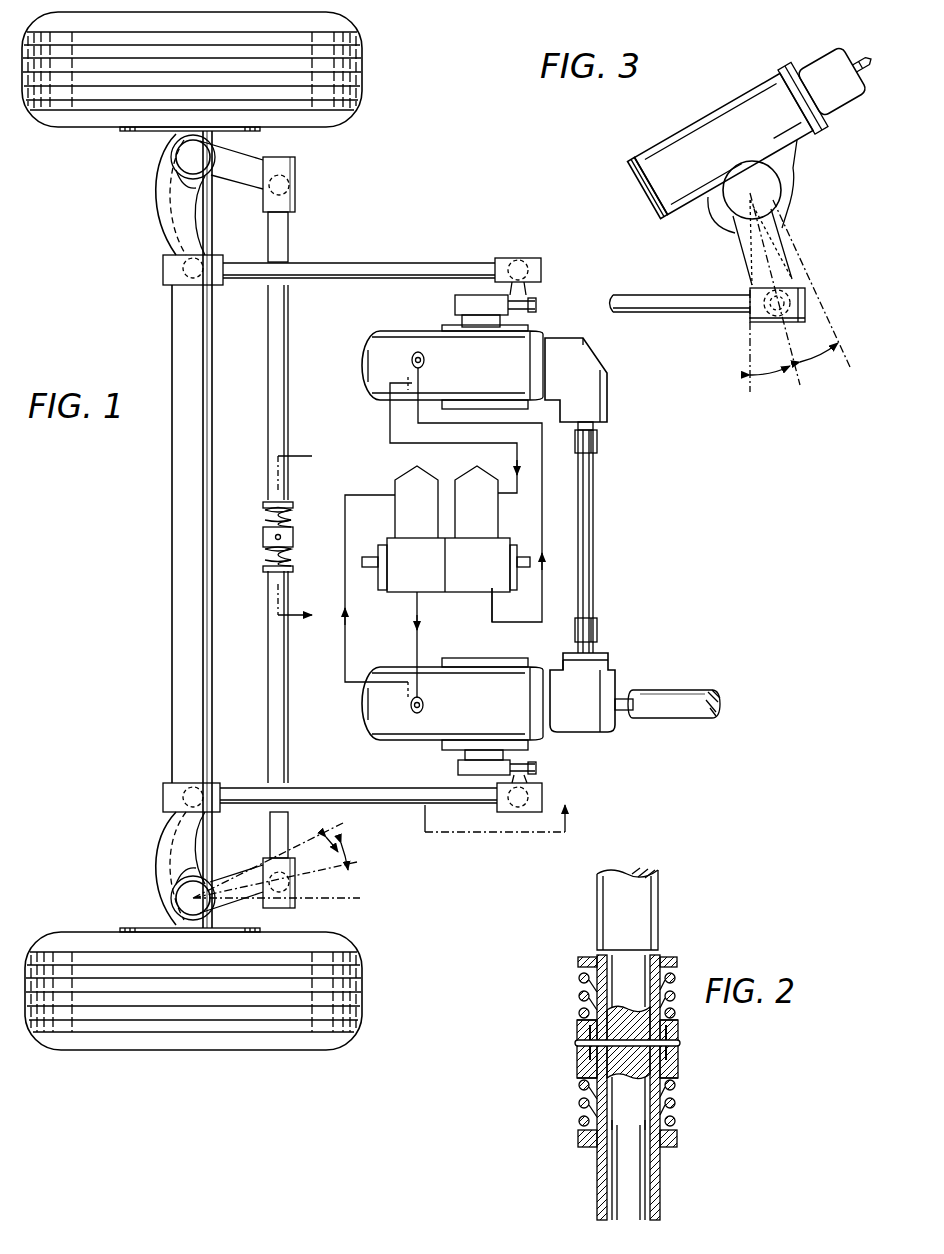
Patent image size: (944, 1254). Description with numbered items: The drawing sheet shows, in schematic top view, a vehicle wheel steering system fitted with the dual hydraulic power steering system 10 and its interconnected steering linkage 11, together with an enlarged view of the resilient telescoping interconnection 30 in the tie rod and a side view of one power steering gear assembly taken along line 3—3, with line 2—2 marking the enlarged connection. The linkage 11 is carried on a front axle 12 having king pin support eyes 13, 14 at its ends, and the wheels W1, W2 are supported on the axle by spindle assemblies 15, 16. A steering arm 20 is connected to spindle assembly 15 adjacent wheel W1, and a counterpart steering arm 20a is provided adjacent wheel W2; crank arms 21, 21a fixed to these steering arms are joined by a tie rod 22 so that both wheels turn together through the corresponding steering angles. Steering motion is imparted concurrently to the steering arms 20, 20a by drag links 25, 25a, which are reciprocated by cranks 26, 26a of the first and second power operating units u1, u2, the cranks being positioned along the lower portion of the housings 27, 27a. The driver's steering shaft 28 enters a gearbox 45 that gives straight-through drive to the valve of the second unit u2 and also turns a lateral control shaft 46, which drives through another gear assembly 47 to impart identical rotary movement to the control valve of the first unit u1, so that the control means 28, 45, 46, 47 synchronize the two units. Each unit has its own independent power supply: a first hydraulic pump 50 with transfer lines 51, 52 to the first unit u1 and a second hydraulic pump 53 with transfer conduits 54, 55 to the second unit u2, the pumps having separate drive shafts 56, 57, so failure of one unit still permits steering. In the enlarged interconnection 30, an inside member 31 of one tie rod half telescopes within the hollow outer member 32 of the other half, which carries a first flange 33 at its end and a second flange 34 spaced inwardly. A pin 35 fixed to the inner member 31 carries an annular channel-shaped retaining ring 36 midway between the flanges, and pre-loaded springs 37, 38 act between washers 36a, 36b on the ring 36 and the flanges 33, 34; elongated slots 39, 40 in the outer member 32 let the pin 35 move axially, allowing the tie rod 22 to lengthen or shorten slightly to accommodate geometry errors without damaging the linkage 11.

In FIG. 1, the first wheel W1 is at (362, 50).
In FIG. 1, the second wheel W2 is at (340, 1046).
In FIG. 1, the power steering system 10 is at (640, 440).
In FIG. 1, the steering linkage 11 is at (348, 200).
In FIG. 1, the front axle 12 is at (176, 341).
In FIG. 1, the king pin support eye 13 is at (180, 160).
In FIG. 1, the king pin support eye 14 is at (165, 906).
In FIG. 1, the spindle assembly 15 is at (170, 143).
In FIG. 1, the spindle assembly 16 is at (172, 920).
In FIG. 1, the steering arm 20 is at (162, 232).
In FIG. 1, the counterpart steering arm 20a is at (165, 836).
In FIG. 1, the crank arm 21 is at (233, 182).
In FIG. 1, the crank arm 21a is at (218, 878).
In FIG. 1, the tie rod 22 is at (272, 739).
In FIG. 2, the tie rod 22 is at (645, 895).
In FIG. 1, the drag link 25 is at (386, 270).
In FIG. 1, the drag link 25a is at (376, 790).
In FIG. 3, the drag link 25a is at (684, 312).
In FIG. 1, the crank 26 is at (523, 300).
In FIG. 1, the crank 26a is at (537, 767).
In FIG. 3, the crank 26a is at (768, 200).
In FIG. 1, the housing 27 is at (394, 346).
In FIG. 1, the housing 27a is at (452, 704).
In FIG. 3, the housing 27a is at (690, 142).
In FIG. 1, the steering shaft 28 is at (690, 700).
In FIG. 1, the interconnection 30 is at (250, 522).
In FIG. 2, the inside member 31 is at (614, 952).
In FIG. 2, the outer member 32 is at (600, 1162).
In FIG. 2, the first flange 33 is at (580, 964).
In FIG. 2, the second flange 34 is at (580, 1135).
In FIG. 2, the pin 35 is at (578, 1043).
In FIG. 2, the retaining ring 36 is at (680, 1031).
In FIG. 2, the washer 36a is at (678, 1018).
In FIG. 2, the washer 36b is at (683, 1078).
In FIG. 2, the spring 37 is at (580, 1001).
In FIG. 2, the spring 38 is at (676, 1118).
In FIG. 2, the elongated slot 39 is at (598, 1058).
In FIG. 2, the elongated slot 40 is at (655, 1058).
In FIG. 1, the gearbox 45 is at (580, 730).
In FIG. 1, the lateral control shaft 46 is at (591, 580).
In FIG. 1, the gear assembly 47 is at (600, 403).
In FIG. 1, the first hydraulic pump 50 is at (488, 519).
In FIG. 1, the transfer line 51 is at (543, 500).
In FIG. 1, the transfer line 52 is at (478, 447).
In FIG. 1, the second hydraulic pump 53 is at (400, 520).
In FIG. 1, the transfer conduit 54 is at (418, 610).
In FIG. 1, the transfer conduit 55 is at (346, 650).
In FIG. 1, the drive shaft 56 is at (515, 578).
In FIG. 1, the drive shaft 57 is at (378, 580).
In FIG. 1, the first power operating unit u1 is at (368, 400).
In FIG. 1, the second power operating unit u2 is at (628, 636).
In FIG. 3, the second power operating unit u2 is at (732, 66).
In FIG. 1, the section line 2- 2 is at (300, 536).
In FIG. 1, the section line 3- 3 is at (496, 794).